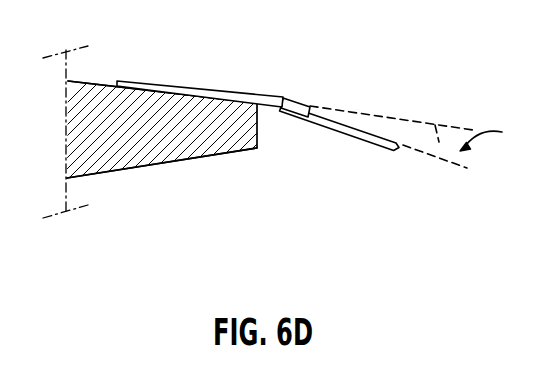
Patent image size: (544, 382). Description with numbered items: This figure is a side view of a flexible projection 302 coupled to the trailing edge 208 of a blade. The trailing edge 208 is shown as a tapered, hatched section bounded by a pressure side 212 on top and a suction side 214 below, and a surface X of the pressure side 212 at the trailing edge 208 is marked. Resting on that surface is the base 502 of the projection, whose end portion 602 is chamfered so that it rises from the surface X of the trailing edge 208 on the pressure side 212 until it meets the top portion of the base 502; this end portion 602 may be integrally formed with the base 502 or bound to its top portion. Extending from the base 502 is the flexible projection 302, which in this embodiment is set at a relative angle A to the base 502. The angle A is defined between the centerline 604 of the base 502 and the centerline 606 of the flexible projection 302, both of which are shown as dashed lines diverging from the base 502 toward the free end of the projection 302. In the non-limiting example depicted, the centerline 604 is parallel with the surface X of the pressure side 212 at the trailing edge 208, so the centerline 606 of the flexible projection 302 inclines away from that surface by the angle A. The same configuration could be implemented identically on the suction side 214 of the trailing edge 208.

The trailing edge 208 is at (245, 149).
The pressure side 212 is at (94, 83).
The suction side 214 is at (86, 177).
The flexible projection 302 is at (337, 126).
The base 502 is at (293, 94).
The end portion 602 is at (214, 89).
The centerline of the base 604 is at (405, 118).
The centerline of the flexible projection 606 is at (413, 149).
The surface X is at (138, 167).
The angle A is at (492, 134).